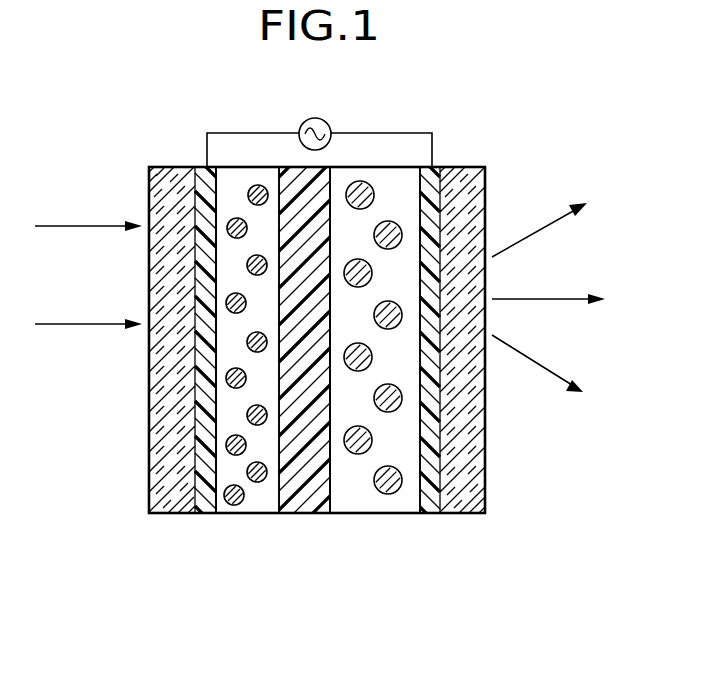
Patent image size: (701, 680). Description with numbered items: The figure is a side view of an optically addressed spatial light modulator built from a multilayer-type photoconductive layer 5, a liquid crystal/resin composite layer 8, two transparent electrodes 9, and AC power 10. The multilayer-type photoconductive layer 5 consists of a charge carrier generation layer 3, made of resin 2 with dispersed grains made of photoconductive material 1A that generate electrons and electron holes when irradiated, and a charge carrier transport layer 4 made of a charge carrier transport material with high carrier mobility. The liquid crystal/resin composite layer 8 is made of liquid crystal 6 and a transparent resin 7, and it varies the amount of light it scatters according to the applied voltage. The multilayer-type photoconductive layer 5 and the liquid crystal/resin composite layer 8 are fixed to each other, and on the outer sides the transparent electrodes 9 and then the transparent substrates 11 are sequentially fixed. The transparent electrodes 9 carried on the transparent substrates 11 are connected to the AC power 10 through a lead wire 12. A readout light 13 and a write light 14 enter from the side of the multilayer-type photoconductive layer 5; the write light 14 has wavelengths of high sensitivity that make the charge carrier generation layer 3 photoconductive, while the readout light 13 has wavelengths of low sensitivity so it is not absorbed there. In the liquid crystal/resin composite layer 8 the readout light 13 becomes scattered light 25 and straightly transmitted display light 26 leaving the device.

The grains made of photoconductive material 1A is at (233, 503).
The resin 2 is at (257, 503).
The charge carrier generation layer 3 is at (292, 578).
The charge carrier transport layer 4 is at (310, 503).
The multilayer-type photoconductive layer 5 is at (333, 628).
The liquid crystal 6 is at (350, 503).
The transparent resin 7 is at (373, 503).
The liquid crystal/resin composite layer 8 is at (420, 578).
The transparent electrode 9 is at (201, 503).
The AC power 10 is at (330, 125).
The transparent substrate 11 is at (172, 183).
The lead wire 12 is at (248, 133).
The readout light 13 is at (72, 324).
The write light 14 is at (70, 226).
The scattered light 25 is at (545, 225).
The display light 26 is at (540, 297).